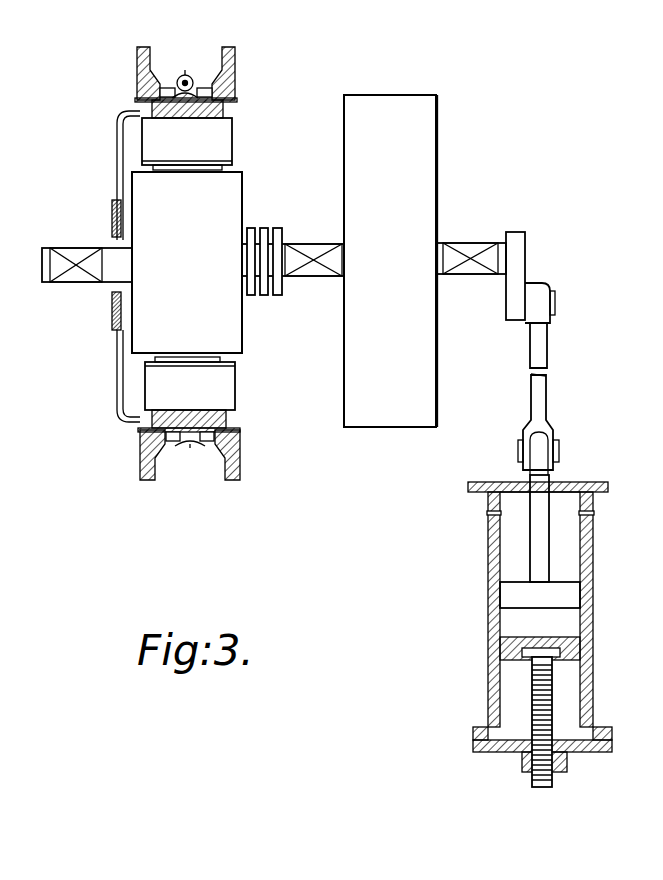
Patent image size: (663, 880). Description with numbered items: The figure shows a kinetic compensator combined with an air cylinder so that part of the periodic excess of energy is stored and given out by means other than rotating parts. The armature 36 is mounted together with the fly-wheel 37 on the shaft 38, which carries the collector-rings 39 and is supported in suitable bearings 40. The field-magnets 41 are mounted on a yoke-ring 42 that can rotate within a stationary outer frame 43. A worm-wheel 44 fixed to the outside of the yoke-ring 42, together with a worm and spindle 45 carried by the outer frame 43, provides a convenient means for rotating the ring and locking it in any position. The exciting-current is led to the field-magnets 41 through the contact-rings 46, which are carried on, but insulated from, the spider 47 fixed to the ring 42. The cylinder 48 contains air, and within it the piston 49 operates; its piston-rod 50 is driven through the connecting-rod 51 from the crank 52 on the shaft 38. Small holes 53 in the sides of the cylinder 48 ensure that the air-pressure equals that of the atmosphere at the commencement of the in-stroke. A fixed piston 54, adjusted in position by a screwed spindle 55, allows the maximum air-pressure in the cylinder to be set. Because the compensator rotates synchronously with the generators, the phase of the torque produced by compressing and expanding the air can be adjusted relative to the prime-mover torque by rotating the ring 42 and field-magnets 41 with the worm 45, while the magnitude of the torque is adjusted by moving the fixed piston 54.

The armature 36 is at (187, 262).
The fly-wheel 37 is at (391, 261).
The shaft 38 is at (507, 246).
The collector-rings 39 is at (253, 227).
The bearings 40 is at (75, 276).
The field-magnets 41 is at (222, 147).
The yoke-ring 42 is at (224, 114).
The stationary outer frame 43 is at (236, 53).
The worm-wheel 44 is at (177, 76).
The worm and spindle 45 is at (190, 76).
The contact-rings 46 is at (112, 214).
The spider 47 is at (117, 131).
The cylinder 48 is at (570, 566).
The piston 49 is at (575, 598).
The piston-rod 50 is at (537, 541).
The connecting-rod 51 is at (545, 354).
The crank 52 is at (510, 306).
The small holes 53 is at (488, 513).
The fixed piston 54 is at (500, 652).
The screwed spindle 55 is at (499, 722).